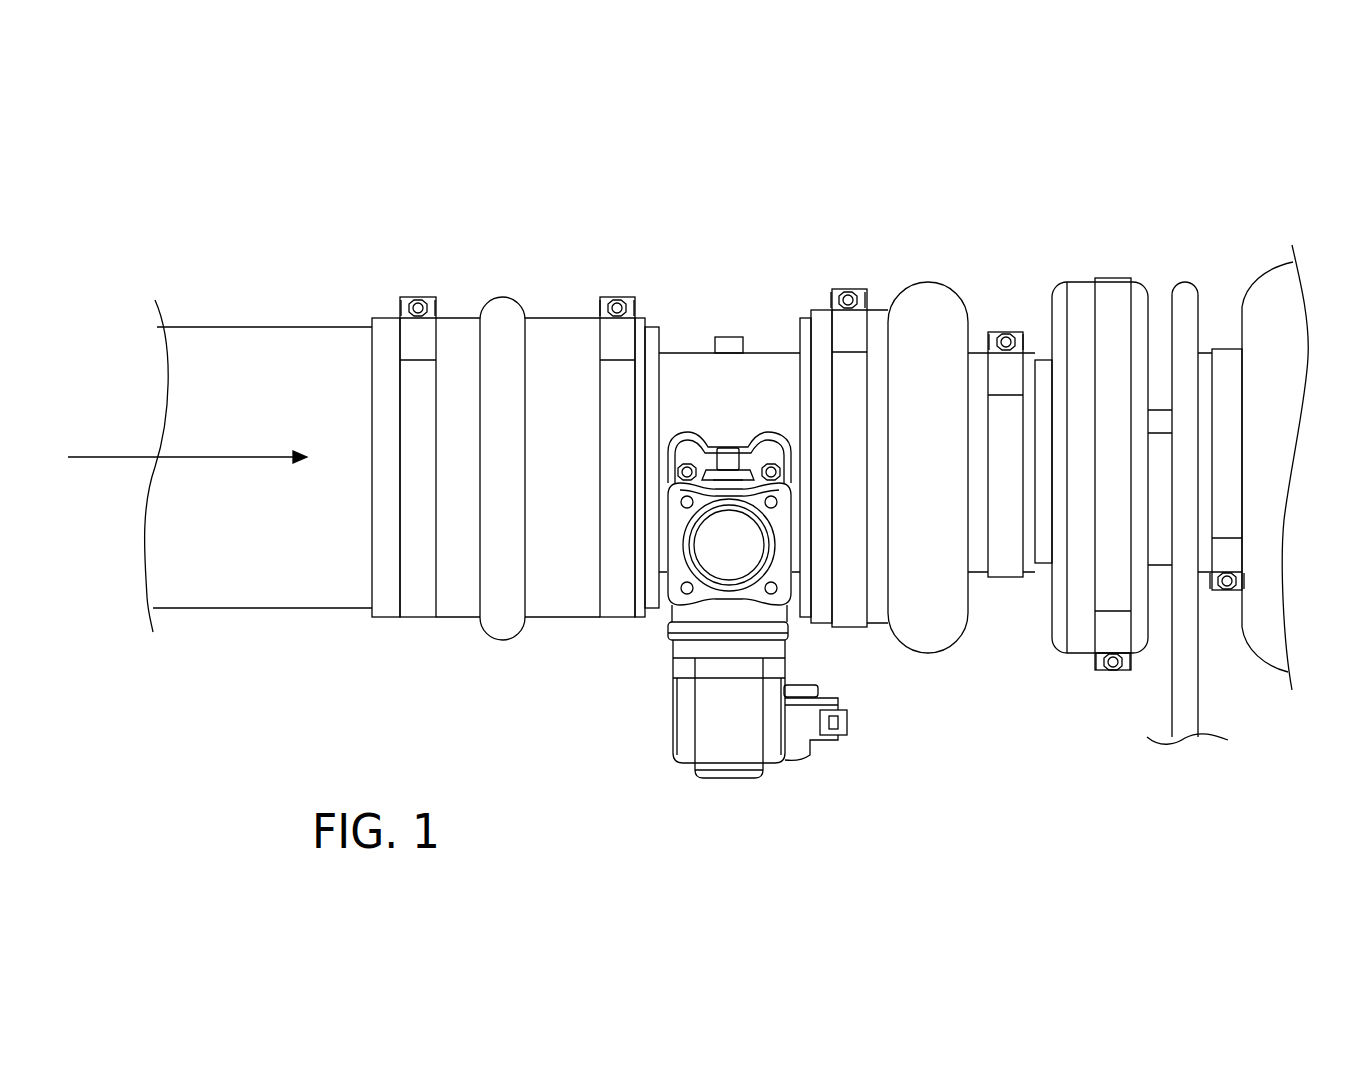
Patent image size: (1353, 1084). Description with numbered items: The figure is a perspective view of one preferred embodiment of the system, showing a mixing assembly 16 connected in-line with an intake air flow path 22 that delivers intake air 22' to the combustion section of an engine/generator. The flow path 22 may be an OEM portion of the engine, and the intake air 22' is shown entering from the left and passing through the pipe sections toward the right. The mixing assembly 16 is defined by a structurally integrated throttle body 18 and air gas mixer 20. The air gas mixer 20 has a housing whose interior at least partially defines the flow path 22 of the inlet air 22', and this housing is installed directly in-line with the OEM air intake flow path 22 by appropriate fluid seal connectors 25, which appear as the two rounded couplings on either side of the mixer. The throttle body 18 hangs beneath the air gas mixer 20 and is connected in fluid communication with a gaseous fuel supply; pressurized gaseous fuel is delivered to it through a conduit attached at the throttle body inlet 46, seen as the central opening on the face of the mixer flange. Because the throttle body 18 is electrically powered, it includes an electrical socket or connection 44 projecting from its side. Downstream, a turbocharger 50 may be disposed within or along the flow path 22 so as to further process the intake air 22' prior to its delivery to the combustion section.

The mixing assembly 16 is at (705, 333).
The throttle body 18 is at (668, 640).
The air gas mixer 20 is at (729, 494).
The flow path 22 is at (258, 504).
The intake air 22' is at (180, 411).
The fluid seal connectors 25 is at (505, 308).
The electrical socket 44 is at (848, 723).
The throttle body inlet 46 is at (745, 560).
The turbocharger 50 is at (1111, 270).